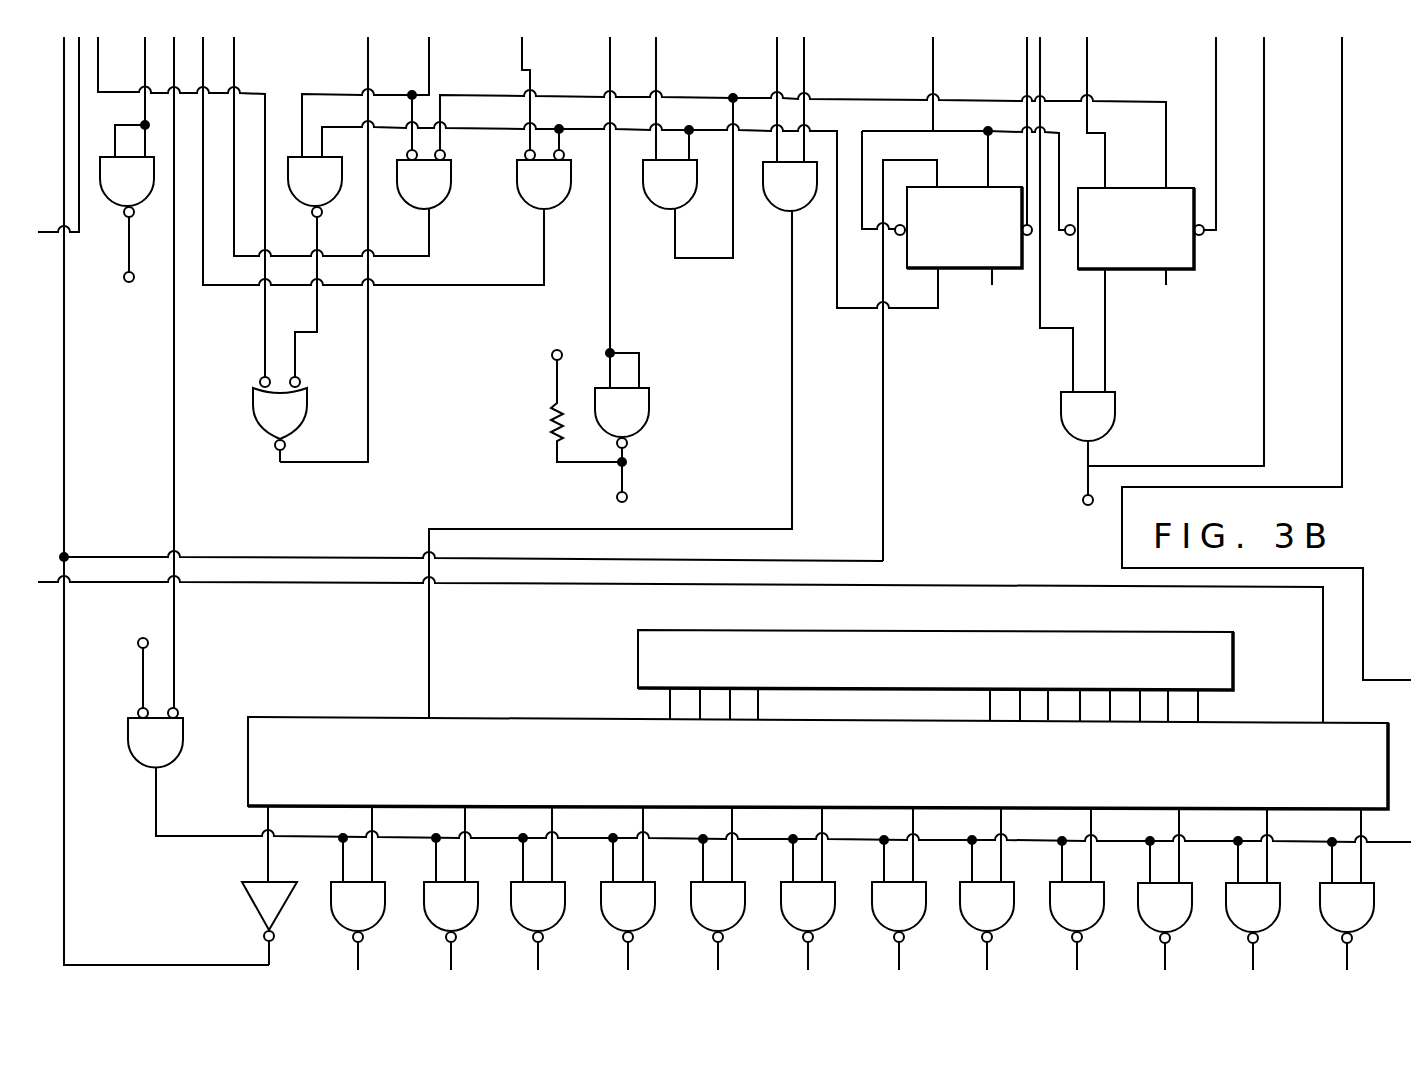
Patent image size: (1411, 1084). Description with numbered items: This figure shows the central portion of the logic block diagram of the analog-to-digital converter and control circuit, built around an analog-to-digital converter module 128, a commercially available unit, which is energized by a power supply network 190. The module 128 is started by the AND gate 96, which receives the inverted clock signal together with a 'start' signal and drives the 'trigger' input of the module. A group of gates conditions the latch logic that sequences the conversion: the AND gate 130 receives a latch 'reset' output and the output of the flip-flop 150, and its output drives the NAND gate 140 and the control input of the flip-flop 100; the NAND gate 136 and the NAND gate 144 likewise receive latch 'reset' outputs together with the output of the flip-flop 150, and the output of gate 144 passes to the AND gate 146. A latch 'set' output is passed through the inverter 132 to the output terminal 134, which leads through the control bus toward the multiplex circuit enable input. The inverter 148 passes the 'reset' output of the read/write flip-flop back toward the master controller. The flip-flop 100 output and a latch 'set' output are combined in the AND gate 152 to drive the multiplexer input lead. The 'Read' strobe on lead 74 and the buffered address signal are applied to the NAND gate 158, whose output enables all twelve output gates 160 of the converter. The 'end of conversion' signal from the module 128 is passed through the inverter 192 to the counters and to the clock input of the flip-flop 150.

The lead 74 is at (143, 636).
The AND gate 96 is at (780, 211).
The flip-flop 100 is at (1140, 272).
The analog-to-digital converter module 128 is at (513, 716).
The AND gate 130 is at (656, 209).
The inverter 132 is at (649, 415).
The output terminal 134 is at (628, 495).
The NAND gate 136 is at (530, 209).
The NAND gate 140 is at (440, 209).
The NAND gate 144 is at (302, 208).
The AND gate 146 is at (307, 415).
The inverter 148 is at (119, 207).
The flip-flop 150 is at (965, 271).
The AND gate 152 is at (1115, 420).
The NAND gate 158 is at (183, 750).
The output gates 160 is at (431, 931).
The power supply network 190 is at (1233, 670).
The inverter 192 is at (252, 905).